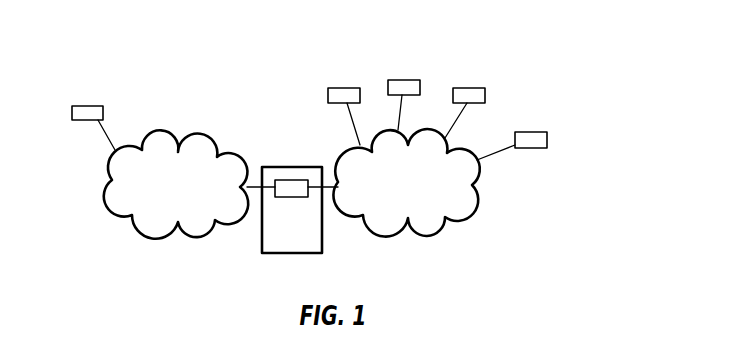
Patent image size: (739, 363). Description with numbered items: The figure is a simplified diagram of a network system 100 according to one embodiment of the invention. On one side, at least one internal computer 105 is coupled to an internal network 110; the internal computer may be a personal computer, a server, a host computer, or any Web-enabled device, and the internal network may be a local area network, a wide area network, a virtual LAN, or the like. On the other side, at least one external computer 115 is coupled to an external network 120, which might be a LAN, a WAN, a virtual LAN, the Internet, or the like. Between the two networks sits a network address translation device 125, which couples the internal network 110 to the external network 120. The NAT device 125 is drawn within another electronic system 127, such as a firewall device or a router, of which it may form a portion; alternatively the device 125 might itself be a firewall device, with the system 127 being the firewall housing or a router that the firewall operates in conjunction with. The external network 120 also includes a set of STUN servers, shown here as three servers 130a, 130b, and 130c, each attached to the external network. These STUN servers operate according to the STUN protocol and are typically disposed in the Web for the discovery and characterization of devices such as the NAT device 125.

The network system 100 is at (533, 230).
The internal computer 105 is at (88, 105).
The internal network 110 is at (157, 227).
The external computer 115 is at (548, 140).
The external network 120 is at (428, 227).
The network address translation (NAT) device 125 is at (288, 194).
The electronic system 127 is at (292, 167).
The STUN server 130a is at (345, 89).
The STUN server 130b is at (403, 81).
The STUN server 130c is at (472, 89).